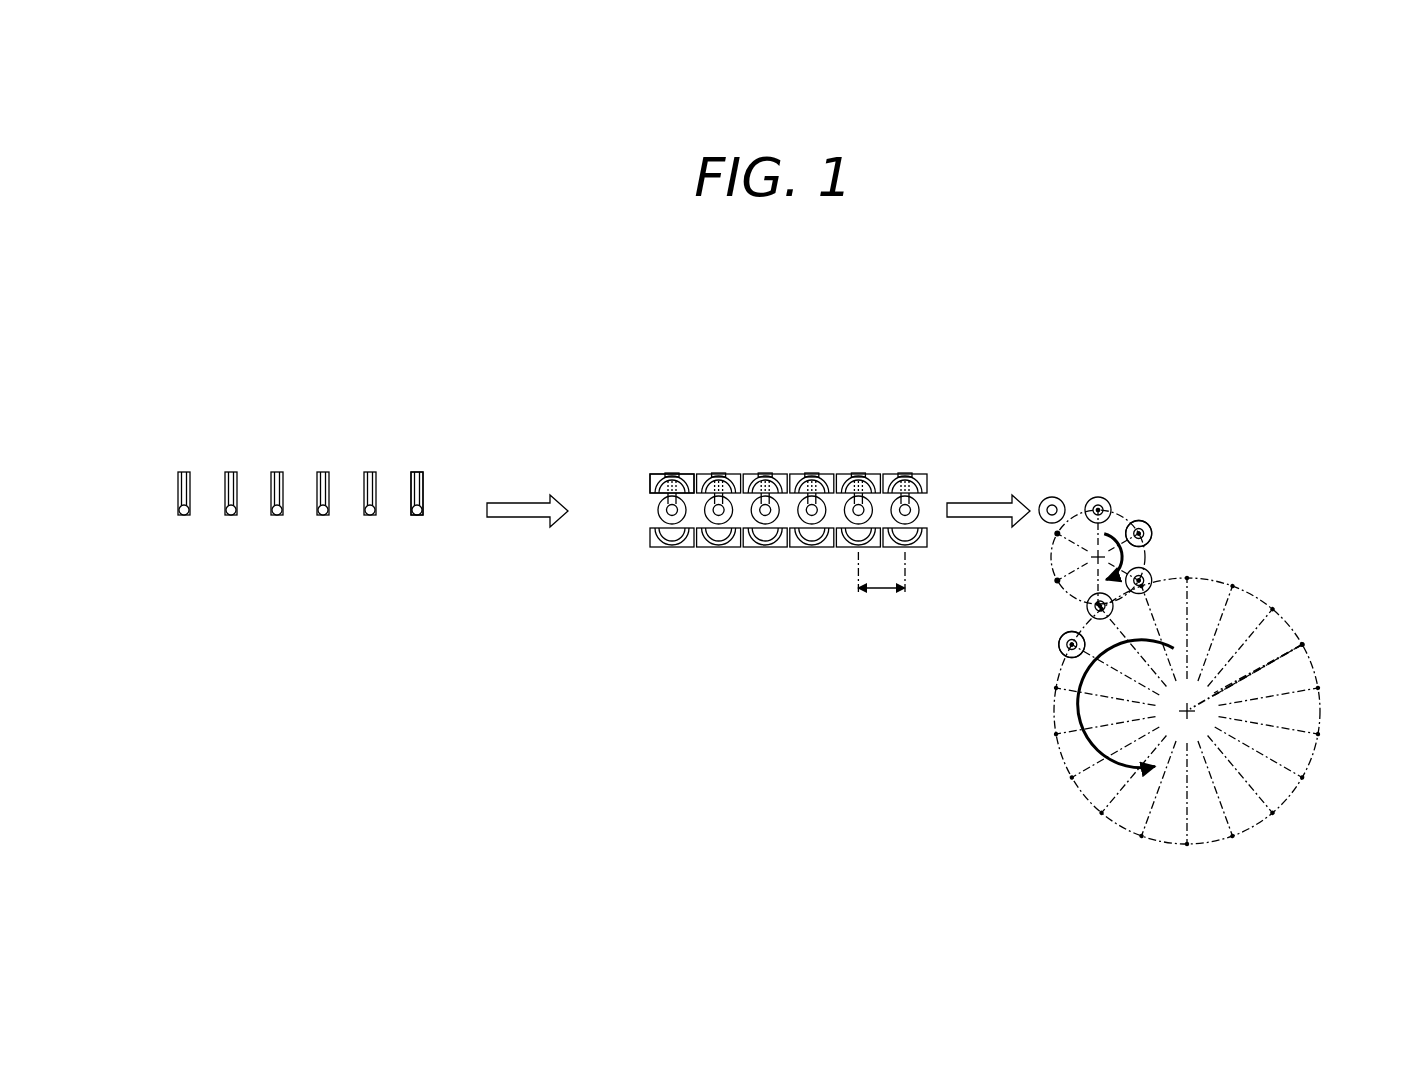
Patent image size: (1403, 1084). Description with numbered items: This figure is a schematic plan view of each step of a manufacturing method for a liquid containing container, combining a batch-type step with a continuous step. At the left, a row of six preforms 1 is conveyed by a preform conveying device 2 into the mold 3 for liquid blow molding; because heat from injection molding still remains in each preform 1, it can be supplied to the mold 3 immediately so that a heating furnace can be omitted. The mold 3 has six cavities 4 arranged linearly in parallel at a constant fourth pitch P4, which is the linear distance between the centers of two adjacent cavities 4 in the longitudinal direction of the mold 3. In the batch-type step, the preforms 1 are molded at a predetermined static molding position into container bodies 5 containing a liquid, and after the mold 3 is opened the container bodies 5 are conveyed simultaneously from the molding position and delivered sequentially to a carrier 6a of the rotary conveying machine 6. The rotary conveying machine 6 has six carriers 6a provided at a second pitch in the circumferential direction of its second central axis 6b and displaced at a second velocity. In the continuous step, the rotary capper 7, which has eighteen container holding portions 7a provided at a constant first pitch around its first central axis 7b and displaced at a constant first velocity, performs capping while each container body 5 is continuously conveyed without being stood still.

The preform 1 is at (416, 521).
The preform conveying device 2 is at (423, 481).
The mold 3 is at (670, 552).
The cavity 4 is at (672, 542).
The container body 5 is at (1046, 496).
The rotary conveying machine 6 is at (1160, 506).
The carrier 6a is at (1152, 534).
The second central axis 6b is at (1070, 548).
The rotary capper 7 is at (1040, 706).
The container holding portion 7a is at (1059, 647).
The first central axis 7b is at (1303, 640).
The fourth pitch P4 is at (881, 584).